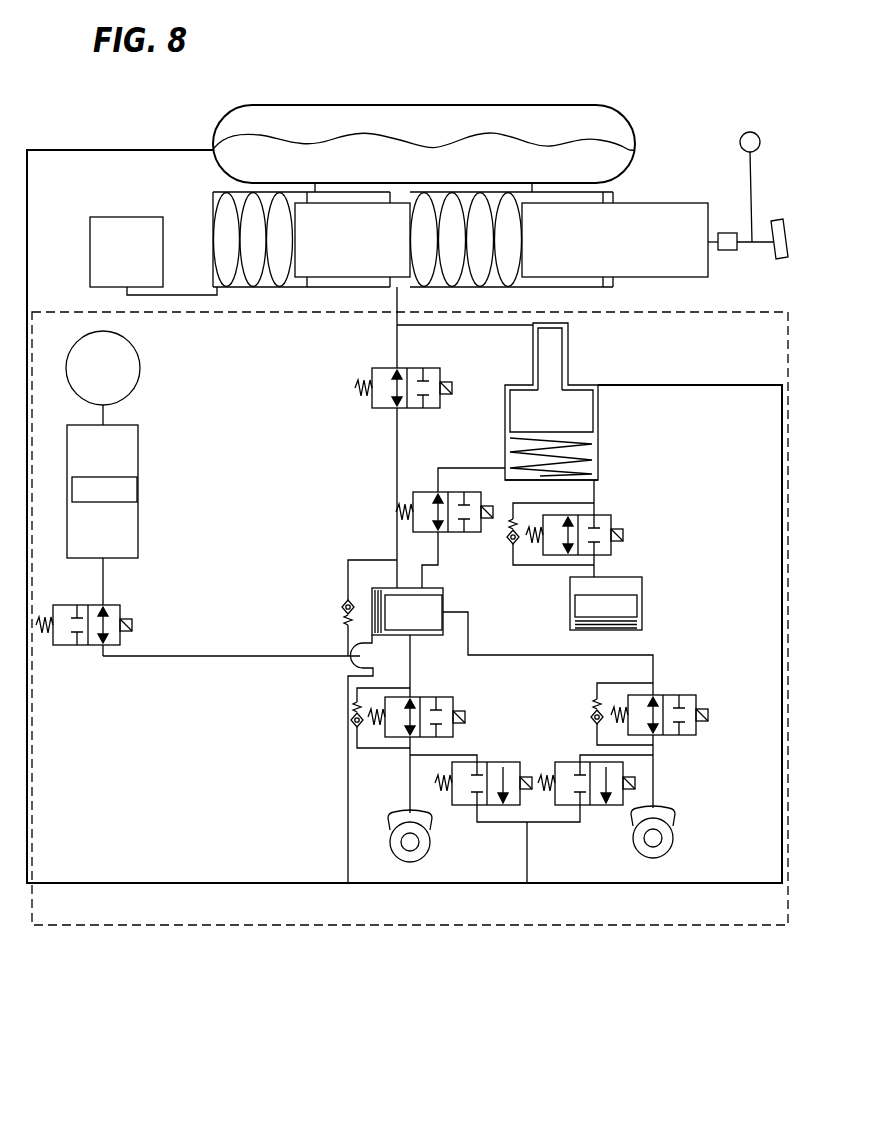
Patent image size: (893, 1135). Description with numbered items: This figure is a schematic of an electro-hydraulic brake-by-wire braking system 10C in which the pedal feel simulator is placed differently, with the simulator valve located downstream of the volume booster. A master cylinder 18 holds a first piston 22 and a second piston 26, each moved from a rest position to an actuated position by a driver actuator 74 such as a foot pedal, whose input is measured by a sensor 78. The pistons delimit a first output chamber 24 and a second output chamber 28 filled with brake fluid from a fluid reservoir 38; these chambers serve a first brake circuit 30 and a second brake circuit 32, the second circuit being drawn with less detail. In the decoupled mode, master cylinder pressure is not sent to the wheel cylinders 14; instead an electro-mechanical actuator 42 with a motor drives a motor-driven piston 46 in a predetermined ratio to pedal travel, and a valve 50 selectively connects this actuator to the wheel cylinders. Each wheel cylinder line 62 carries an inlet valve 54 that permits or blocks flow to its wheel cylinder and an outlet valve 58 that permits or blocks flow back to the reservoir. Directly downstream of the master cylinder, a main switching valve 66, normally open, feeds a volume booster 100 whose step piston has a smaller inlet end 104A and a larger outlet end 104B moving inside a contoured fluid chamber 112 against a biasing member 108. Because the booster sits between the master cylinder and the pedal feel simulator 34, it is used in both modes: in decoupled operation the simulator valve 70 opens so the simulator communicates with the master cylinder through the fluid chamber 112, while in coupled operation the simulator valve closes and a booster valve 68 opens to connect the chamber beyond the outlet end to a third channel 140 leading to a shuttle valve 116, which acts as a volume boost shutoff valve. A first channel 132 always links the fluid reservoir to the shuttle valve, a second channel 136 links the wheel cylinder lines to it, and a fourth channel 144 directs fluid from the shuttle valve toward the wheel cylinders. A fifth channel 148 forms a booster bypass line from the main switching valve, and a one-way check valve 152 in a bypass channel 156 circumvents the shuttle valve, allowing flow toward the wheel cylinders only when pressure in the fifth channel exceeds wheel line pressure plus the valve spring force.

The braking system 10C is at (680, 61).
The wheel cylinders 14 is at (433, 822).
The master cylinder 18 is at (203, 198).
The first piston 22 is at (615, 240).
The first output chamber 24 is at (490, 278).
The second piston 26 is at (352, 240).
The second output chamber 28 is at (273, 278).
The first brake circuit 30 is at (300, 925).
The second brake circuit 32 is at (153, 256).
The pedal feel simulator 34 is at (637, 585).
The fluid reservoir 38 is at (451, 103).
The electro-mechanical actuator 42 is at (152, 368).
The motor-driven piston 46 is at (130, 485).
The valve 50 is at (123, 612).
The inlet valve 54 is at (451, 707).
The outlet valve 58 is at (482, 762).
The wheel cylinder line 62 is at (408, 773).
The main switching valve 66 is at (370, 406).
The booster valve 68 is at (474, 533).
The simulator valve 70 is at (613, 553).
The driver actuator 74 is at (777, 164).
The sensor 78 is at (725, 255).
The volume booster 100 is at (606, 430).
The inlet end 104A is at (545, 351).
The outlet end 104B is at (590, 410).
The biasing member 108 is at (598, 444).
The fluid chamber 112 is at (600, 463).
The shuttle valve 116 is at (445, 594).
The first channel 132 is at (346, 793).
The second channel 136 is at (468, 635).
The third channel 140 is at (482, 467).
The fourth channel 144 is at (412, 647).
The fifth channel 148 is at (392, 548).
The check valve 152 is at (341, 611).
The bypass channel 156 is at (347, 645).